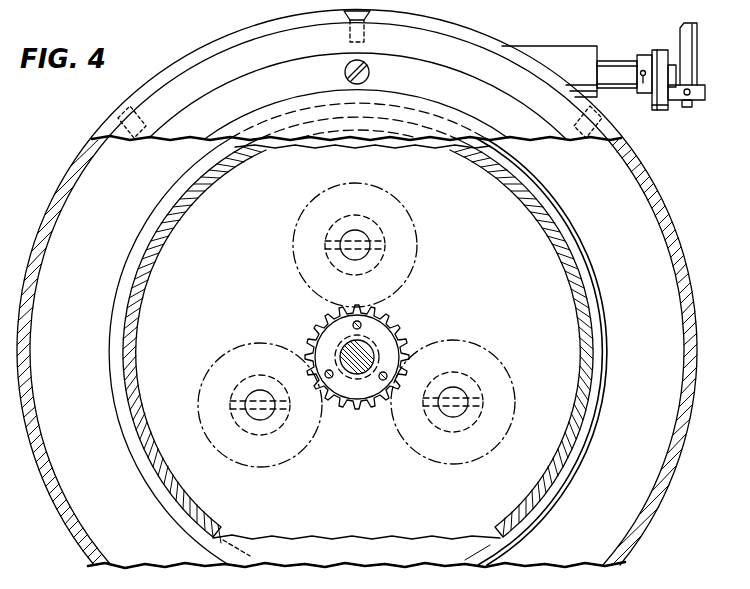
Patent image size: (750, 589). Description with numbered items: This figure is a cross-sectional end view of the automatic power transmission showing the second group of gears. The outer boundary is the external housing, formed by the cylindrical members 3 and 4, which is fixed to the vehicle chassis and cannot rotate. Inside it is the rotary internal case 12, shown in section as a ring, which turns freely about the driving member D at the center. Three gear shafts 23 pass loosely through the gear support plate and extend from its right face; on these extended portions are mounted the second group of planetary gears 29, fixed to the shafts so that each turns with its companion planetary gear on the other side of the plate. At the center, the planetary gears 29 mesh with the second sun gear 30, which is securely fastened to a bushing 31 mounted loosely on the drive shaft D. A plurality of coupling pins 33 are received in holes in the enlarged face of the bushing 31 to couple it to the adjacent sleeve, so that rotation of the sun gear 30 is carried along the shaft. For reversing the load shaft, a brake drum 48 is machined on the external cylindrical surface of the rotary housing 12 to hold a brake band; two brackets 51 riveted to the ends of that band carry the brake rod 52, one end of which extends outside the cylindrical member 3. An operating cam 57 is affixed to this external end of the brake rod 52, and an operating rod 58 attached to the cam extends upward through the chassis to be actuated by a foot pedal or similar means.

The cylindrical member 3 is at (672, 238).
The cylindrical member 4 is at (456, 120).
The internal case 12 is at (172, 224).
The gear shafts 23 is at (366, 325).
The planetary gears 29 is at (292, 251).
The second sun gear 30 is at (386, 332).
The bushing 31 is at (385, 338).
The coupling pins 33 is at (327, 370).
The driving member D is at (360, 372).
The brake drum 48 is at (130, 260).
The brackets 51 is at (222, 142).
The brake rod 52 is at (622, 63).
The operating cam 57 is at (665, 110).
The operating rod 58 is at (697, 48).